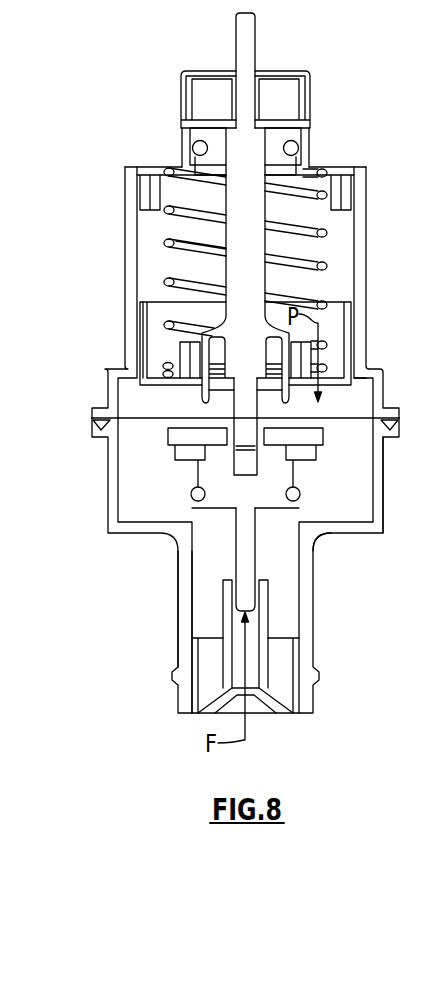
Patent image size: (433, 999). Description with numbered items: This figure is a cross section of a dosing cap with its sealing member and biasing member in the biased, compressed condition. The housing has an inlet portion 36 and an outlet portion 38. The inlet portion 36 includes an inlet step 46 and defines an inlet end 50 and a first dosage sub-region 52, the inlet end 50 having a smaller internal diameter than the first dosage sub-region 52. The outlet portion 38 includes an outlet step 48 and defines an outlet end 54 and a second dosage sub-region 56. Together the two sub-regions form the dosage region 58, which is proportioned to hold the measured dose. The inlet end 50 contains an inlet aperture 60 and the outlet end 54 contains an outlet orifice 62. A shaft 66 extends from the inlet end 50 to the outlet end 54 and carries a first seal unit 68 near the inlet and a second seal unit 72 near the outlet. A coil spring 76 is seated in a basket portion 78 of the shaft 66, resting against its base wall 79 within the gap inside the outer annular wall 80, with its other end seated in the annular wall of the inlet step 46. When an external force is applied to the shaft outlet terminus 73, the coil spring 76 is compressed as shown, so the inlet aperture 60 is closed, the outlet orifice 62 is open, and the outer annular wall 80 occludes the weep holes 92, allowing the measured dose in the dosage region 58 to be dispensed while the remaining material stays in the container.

The inlet portion 36 is at (124, 214).
The outlet portion 38 is at (110, 497).
The inlet step 46 is at (348, 167).
The outlet step 48 is at (350, 533).
The inlet end 50 is at (313, 137).
The first dosage sub-region 52 is at (336, 273).
The outlet end 54 is at (176, 608).
The second dosage sub-region 56 is at (358, 507).
The dosage region 58 is at (153, 264).
The inlet aperture 60 is at (286, 76).
The outlet orifice 62 is at (262, 706).
The shaft 66 is at (254, 270).
The first seal unit 68 is at (209, 158).
The second seal unit 72 is at (283, 478).
The shaft outlet terminus 73 is at (250, 609).
The coil spring 76 is at (217, 252).
The basket portion 78 is at (338, 313).
The base wall 79 is at (347, 398).
The outer annular wall 80 is at (143, 318).
The weep holes 92 is at (366, 350).